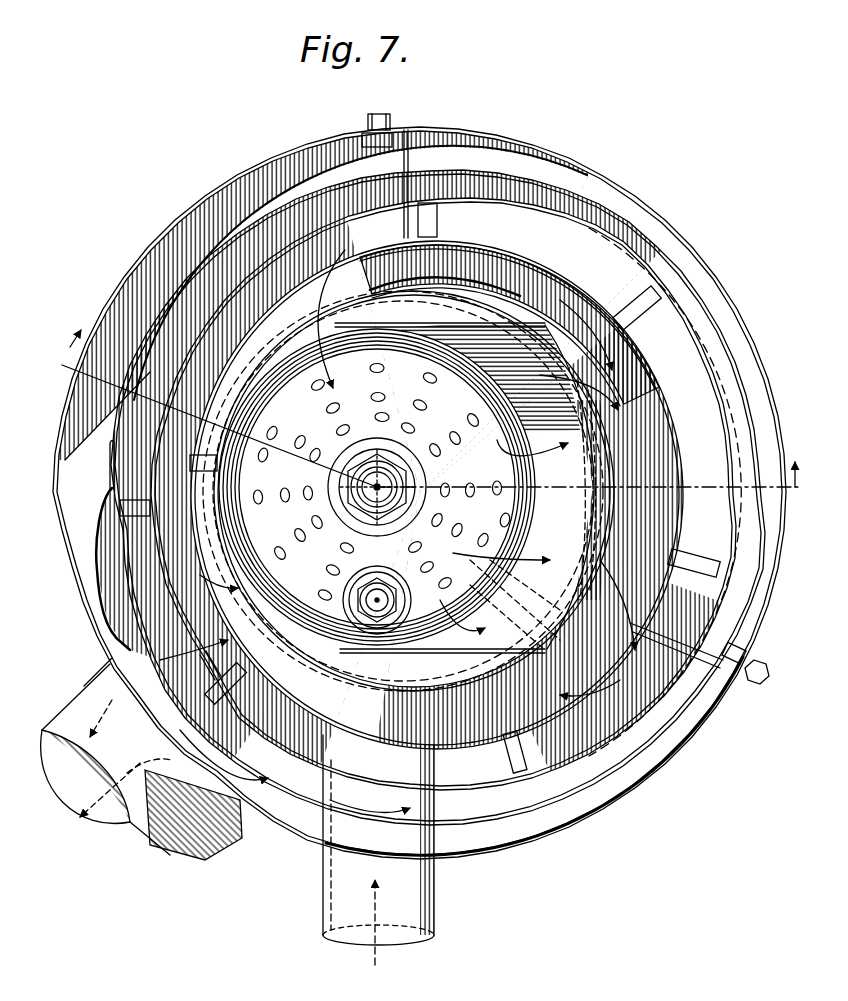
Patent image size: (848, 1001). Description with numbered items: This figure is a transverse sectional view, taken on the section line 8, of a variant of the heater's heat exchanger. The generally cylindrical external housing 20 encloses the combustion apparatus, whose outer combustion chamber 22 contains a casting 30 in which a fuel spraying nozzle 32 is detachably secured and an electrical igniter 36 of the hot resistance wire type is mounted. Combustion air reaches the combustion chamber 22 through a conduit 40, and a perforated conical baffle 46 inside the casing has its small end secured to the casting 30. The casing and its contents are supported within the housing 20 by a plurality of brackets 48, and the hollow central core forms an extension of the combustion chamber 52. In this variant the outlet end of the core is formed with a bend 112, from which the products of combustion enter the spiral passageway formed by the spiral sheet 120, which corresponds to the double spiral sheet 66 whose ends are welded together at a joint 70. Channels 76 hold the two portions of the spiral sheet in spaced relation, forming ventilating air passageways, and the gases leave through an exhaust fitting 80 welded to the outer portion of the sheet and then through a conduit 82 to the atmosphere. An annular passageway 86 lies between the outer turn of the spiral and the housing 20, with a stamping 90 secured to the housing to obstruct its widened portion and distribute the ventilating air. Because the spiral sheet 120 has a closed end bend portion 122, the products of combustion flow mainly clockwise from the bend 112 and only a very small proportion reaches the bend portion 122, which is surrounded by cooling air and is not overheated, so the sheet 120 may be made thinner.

The section line 8- 8 is at (430, 420).
The external housing 20 is at (688, 252).
The outer combustion chamber 22 is at (352, 312).
The casting 30 is at (412, 508).
The fuel spraying nozzle 32 is at (400, 487).
The electrical igniter 36 is at (396, 607).
The conduit 40 is at (436, 893).
The perforated conical baffle 46 is at (290, 368).
The brackets 48 is at (412, 153).
The combustion chamber 52 is at (530, 482).
The double spiral sheet 66 is at (710, 358).
The joint 70 is at (131, 436).
The channels 76 is at (140, 499).
The exhaust fitting 80 is at (240, 838).
The conduit 82 is at (200, 864).
The annular passageway 86 is at (728, 312).
The stamping 90 is at (188, 216).
The bend 112 is at (455, 318).
The spiral sheet 120 is at (552, 268).
The closed end bend portion 122 is at (388, 250).